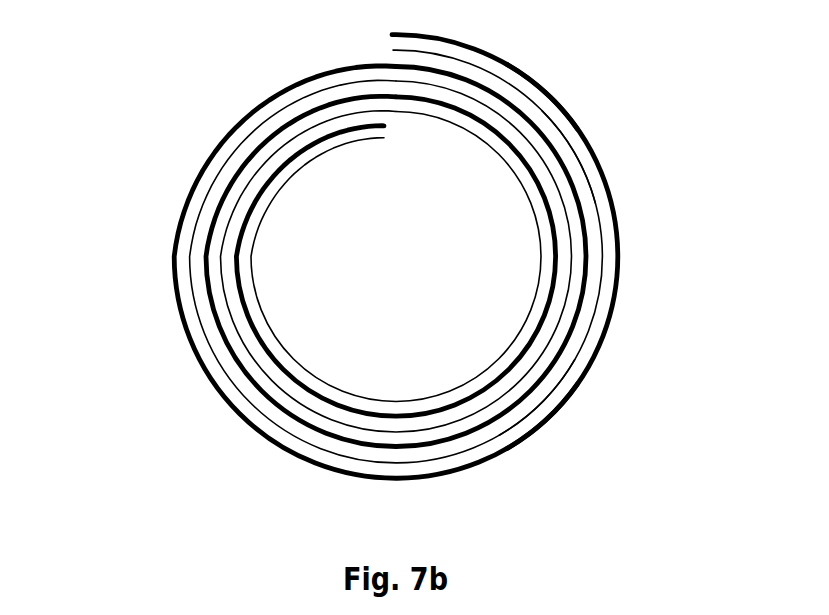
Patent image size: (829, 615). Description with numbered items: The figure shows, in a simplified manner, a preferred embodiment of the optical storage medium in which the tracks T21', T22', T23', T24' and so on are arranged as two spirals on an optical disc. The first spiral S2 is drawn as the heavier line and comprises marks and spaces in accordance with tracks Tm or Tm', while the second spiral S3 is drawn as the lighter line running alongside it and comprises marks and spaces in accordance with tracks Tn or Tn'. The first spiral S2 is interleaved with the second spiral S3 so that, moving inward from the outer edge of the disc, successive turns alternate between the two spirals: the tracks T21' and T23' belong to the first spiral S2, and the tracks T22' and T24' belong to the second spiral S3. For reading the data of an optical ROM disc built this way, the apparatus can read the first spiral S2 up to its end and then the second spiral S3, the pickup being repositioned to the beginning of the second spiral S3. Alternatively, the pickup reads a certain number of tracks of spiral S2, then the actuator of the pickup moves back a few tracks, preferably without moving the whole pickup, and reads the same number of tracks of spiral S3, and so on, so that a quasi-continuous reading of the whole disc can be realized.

The first spiral S2 is at (544, 89).
The second spiral S3 is at (574, 153).
The track T21' is at (327, 257).
The track T22' is at (318, 256).
The track T23' is at (336, 257).
The track T24' is at (347, 279).
The track Tm is at (486, 256).
The track Tm' is at (519, 258).
The track Tn is at (567, 444).
The track Tn' is at (591, 456).